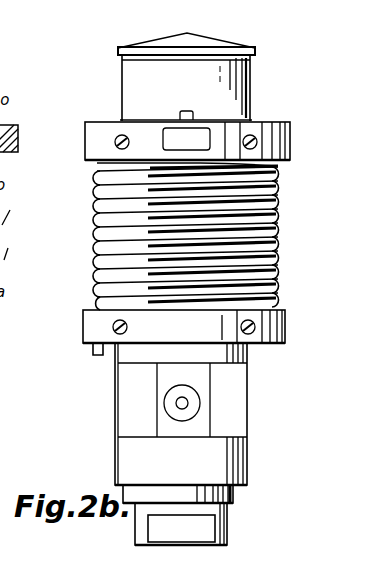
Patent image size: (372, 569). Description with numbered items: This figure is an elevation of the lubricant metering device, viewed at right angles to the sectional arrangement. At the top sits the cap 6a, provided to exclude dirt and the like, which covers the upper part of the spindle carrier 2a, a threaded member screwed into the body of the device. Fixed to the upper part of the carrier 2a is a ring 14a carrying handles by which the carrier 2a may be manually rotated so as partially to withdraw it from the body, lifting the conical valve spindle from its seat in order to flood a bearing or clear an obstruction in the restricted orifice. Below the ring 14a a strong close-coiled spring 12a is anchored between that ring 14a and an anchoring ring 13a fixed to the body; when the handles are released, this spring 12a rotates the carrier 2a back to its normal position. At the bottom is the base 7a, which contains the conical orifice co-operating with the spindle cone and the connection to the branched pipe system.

The cap 6a is at (203, 39).
The spindle carrier 2a is at (250, 77).
The ring 14a is at (288, 156).
The close-coiled spring 12a is at (278, 243).
The anchoring ring 13a is at (285, 338).
The base 7a is at (233, 500).